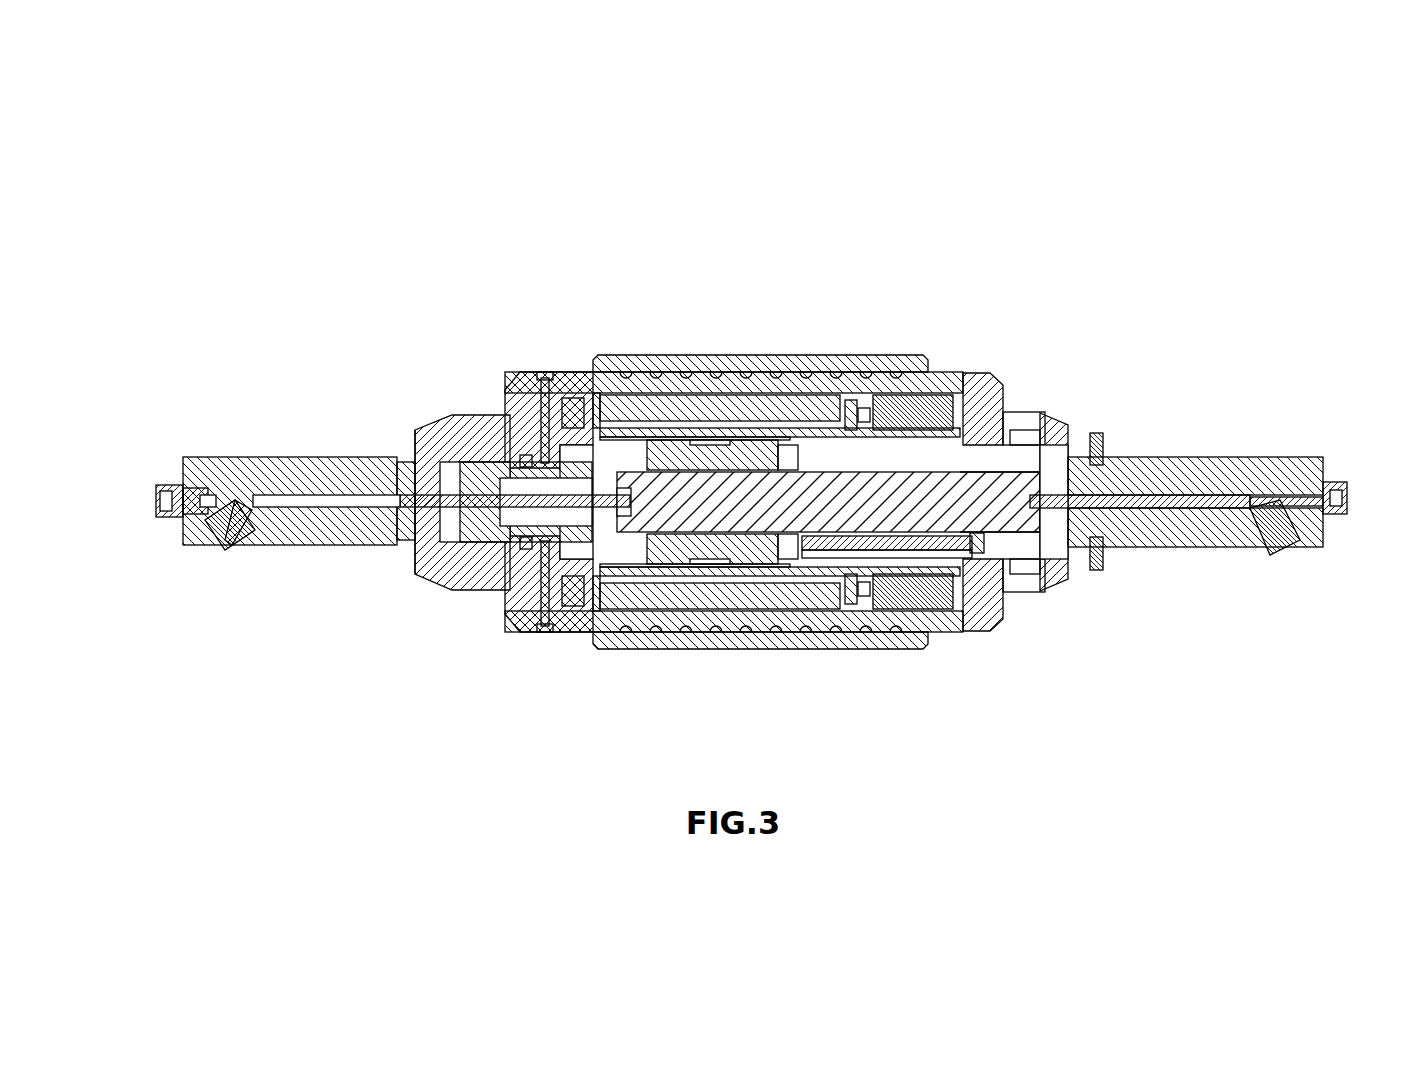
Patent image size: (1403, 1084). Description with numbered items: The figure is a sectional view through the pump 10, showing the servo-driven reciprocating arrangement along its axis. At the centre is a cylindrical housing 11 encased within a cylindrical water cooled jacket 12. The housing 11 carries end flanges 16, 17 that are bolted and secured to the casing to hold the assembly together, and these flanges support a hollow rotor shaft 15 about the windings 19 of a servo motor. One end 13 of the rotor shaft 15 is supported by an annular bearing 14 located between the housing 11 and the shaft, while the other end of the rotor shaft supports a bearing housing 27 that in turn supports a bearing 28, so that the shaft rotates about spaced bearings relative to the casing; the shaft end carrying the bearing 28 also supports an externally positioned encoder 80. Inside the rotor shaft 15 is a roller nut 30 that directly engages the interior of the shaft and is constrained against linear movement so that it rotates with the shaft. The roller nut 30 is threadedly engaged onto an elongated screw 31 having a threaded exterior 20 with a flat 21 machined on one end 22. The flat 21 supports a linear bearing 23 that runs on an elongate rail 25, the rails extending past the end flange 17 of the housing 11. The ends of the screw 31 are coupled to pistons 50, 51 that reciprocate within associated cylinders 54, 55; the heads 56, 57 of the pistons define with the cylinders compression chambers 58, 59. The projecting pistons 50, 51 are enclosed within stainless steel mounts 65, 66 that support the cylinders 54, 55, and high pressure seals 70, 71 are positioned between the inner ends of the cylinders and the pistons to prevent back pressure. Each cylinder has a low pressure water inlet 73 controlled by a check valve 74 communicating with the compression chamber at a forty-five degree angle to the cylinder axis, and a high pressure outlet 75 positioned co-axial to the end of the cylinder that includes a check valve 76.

The pump 10 is at (848, 268).
The cylindrical housing 11 is at (578, 380).
The cylindrical water cooled jacket 12 is at (862, 362).
The end of rotor shaft 13 is at (942, 440).
The annular bearing 14 is at (943, 590).
The hollow rotor shaft 15 is at (655, 590).
The end flange 16 is at (503, 395).
The end flange 17 is at (967, 410).
The windings 19 is at (632, 410).
The threaded exterior 20 is at (719, 512).
The flat 21 is at (1012, 522).
The end of screw 22 is at (1003, 535).
The linear bearing 23 is at (987, 545).
The rail 25 is at (880, 545).
The bearing housing 27 is at (578, 603).
The bearing 28 is at (545, 385).
The roller nut 30 is at (700, 470).
The elongated screw 31 is at (870, 505).
The piston 50 is at (485, 500).
The piston 51 is at (1142, 480).
The cylinder 54 is at (322, 477).
The cylinder 55 is at (1188, 532).
The piston head 56 is at (418, 503).
The piston head 57 is at (1232, 455).
The compression chamber 58 is at (302, 497).
The compression chamber 59 is at (1273, 522).
The stainless steel mount 65 is at (460, 560).
The stainless steel mount 66 is at (1080, 565).
The high pressure seal 70 is at (430, 567).
The high pressure seal 71 is at (1082, 525).
The low pressure water inlet 73 is at (250, 513).
The check valve 74 is at (222, 508).
The high pressure outlet 75 is at (194, 487).
The check valve 76 is at (170, 492).
The encoder 80 is at (530, 448).